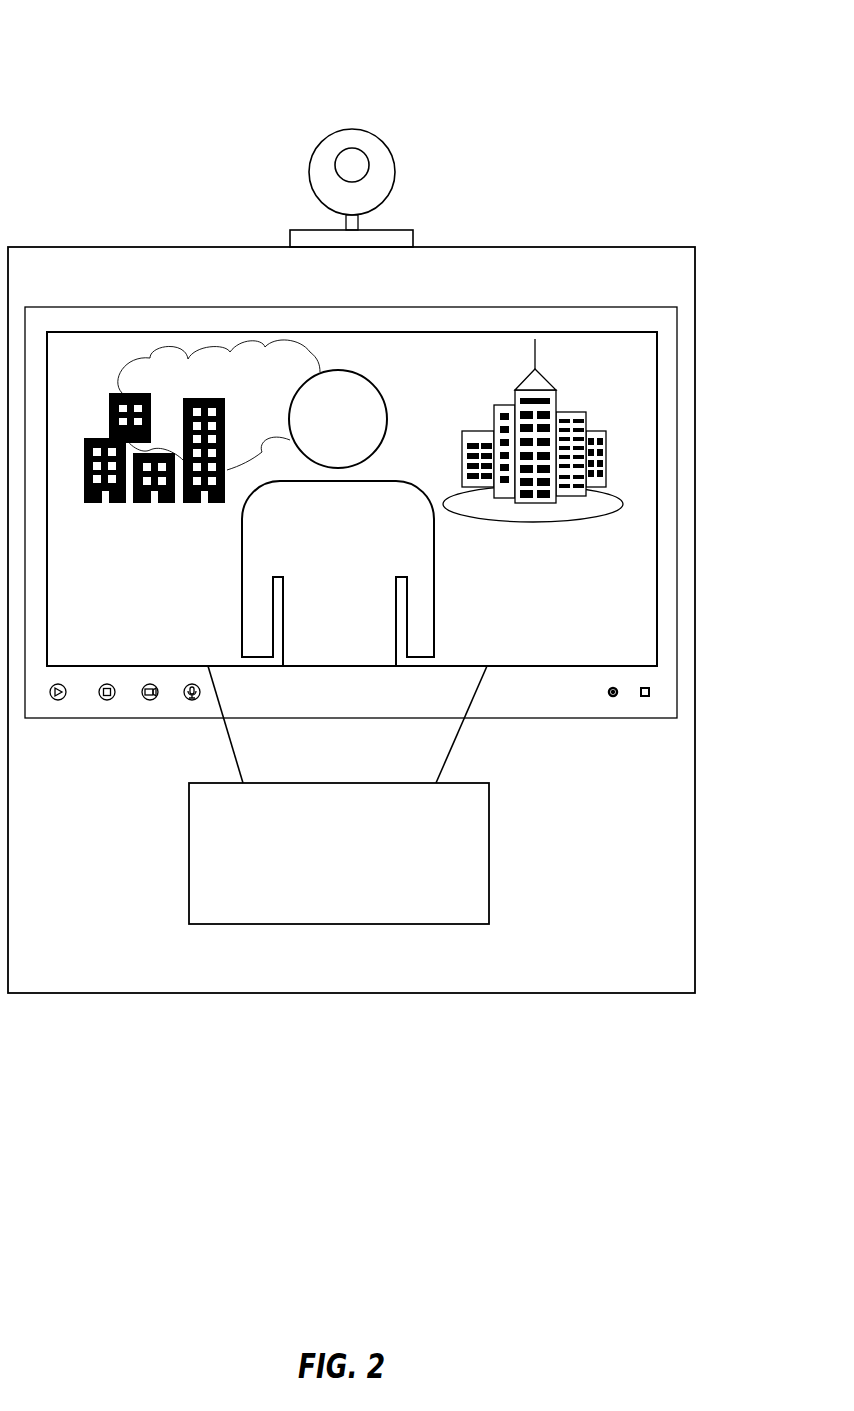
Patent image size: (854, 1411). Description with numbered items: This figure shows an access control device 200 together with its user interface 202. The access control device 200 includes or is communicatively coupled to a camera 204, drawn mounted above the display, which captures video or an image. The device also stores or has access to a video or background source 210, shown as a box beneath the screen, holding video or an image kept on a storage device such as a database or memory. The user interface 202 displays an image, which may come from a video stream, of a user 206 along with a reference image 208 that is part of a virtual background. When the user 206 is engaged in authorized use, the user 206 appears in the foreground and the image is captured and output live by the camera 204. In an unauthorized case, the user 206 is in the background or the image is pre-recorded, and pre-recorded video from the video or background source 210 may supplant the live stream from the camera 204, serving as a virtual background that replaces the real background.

The access control device 200 is at (628, 42).
The user interface 202 is at (428, 307).
The camera 204 is at (392, 150).
The user 206 is at (380, 390).
The reference image 208 is at (513, 515).
The video or background source 210 is at (489, 848).